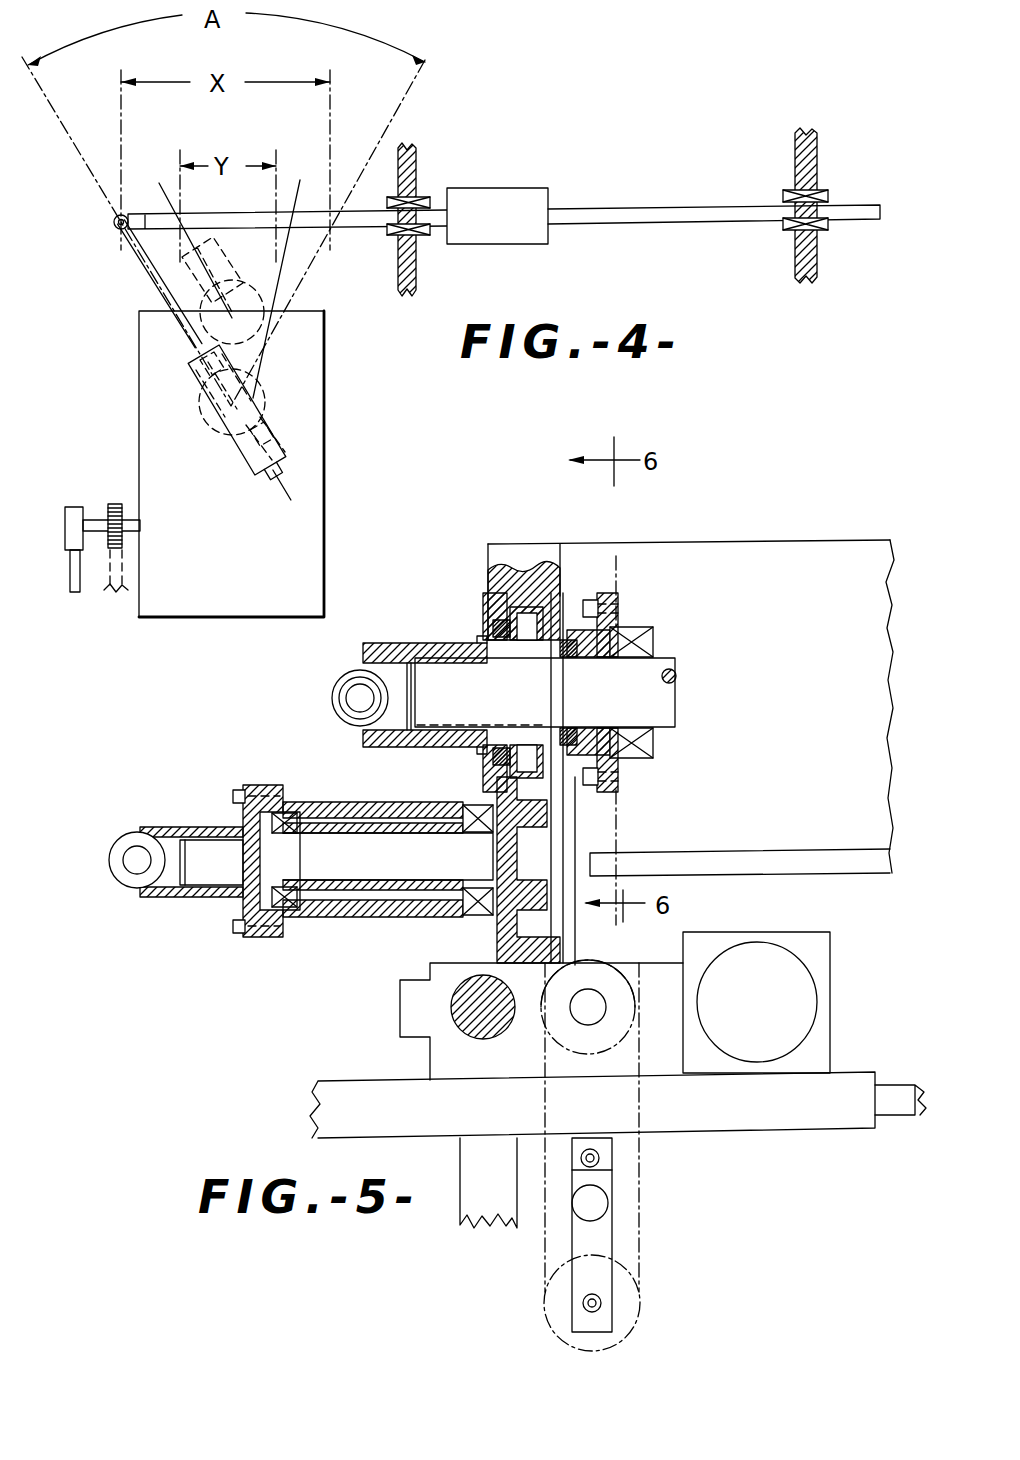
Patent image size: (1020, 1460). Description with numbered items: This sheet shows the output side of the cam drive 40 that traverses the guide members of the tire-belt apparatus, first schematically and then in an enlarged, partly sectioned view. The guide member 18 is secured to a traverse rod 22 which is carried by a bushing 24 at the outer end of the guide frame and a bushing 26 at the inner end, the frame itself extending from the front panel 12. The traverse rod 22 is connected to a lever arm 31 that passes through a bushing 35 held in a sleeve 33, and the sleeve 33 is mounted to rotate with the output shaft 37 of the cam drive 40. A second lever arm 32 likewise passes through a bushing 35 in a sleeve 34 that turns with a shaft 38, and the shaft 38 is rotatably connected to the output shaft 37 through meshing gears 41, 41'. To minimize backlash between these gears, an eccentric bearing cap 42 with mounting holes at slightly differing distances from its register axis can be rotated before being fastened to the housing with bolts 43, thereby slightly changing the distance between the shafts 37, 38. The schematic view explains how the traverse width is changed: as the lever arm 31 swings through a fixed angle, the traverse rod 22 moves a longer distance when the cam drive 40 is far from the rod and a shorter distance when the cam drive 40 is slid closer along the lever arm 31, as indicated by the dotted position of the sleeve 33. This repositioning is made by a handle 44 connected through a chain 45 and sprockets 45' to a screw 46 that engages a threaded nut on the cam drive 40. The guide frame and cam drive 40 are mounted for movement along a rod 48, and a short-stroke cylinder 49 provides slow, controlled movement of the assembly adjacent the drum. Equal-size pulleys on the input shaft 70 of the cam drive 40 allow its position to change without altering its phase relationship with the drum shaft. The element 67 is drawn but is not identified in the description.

In FIG. 5, the front panel 12 is at (370, 1092).
In FIG. 4, the guide member 18 is at (503, 196).
In FIG. 4, the traverse rod 22 is at (653, 208).
In FIG. 4, the bushing 24 is at (829, 197).
In FIG. 4, the bushing 26 is at (390, 238).
In FIG. 4, the lever arm 31 is at (130, 272).
In FIG. 5, the lever arm 31 is at (357, 698).
In FIG. 5, the lever arm 32 is at (133, 867).
In FIG. 4, the sleeve 33 is at (262, 408).
In FIG. 5, the sleeve 33 is at (332, 687).
In FIG. 5, the sleeve 34 is at (108, 860).
In FIG. 4, the bushing 35 is at (205, 384).
In FIG. 5, the bushing 35 is at (357, 672).
In FIG. 5, the output shaft 37 is at (653, 693).
In FIG. 5, the shaft 38 is at (220, 847).
In FIG. 4, the cam drive 40 is at (326, 440).
In FIG. 5, the cam drive 40 is at (750, 548).
In FIG. 5, the gear 41 is at (568, 692).
In FIG. 5, the gear 41' is at (513, 779).
In FIG. 5, the eccentric bearing cap 42 is at (607, 593).
In FIG. 5, the bolts 43 is at (618, 602).
In FIG. 5, the handle 44 is at (602, 1203).
In FIG. 5, the chain 45 is at (634, 1235).
In FIG. 5, the sprockets 45' is at (624, 1157).
In FIG. 5, the screw 46 is at (593, 1007).
In FIG. 5, the rod 48 is at (495, 1030).
In FIG. 5, the cylinder 49 is at (772, 953).
In FIG. 4, the lever 67 is at (72, 574).
In FIG. 4, the input shaft 70 is at (97, 520).